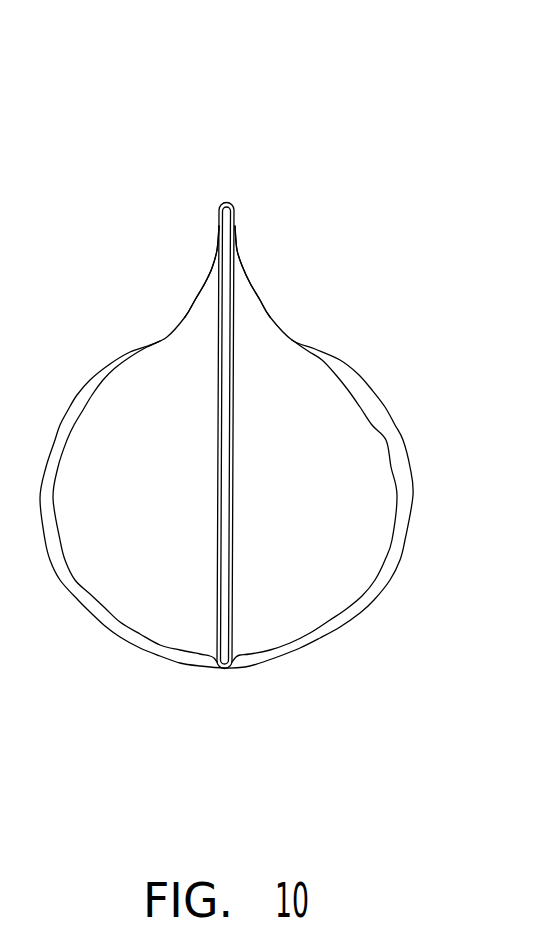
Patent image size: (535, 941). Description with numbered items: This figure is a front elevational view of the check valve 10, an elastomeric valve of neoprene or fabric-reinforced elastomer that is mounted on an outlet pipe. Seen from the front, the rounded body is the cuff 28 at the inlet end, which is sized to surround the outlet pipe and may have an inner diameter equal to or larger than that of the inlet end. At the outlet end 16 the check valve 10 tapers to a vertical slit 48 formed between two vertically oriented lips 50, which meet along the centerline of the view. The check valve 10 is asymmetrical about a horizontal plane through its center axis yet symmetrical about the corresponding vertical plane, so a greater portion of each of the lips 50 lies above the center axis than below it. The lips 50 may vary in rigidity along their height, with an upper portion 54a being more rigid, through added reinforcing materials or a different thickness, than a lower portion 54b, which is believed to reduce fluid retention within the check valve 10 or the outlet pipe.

The check valve 10 is at (451, 121).
The outlet end 16 is at (232, 525).
The cuff 28 is at (370, 383).
The slit 48 is at (220, 224).
The lips 50 is at (221, 261).
The upper portion 54a is at (220, 337).
The lower portion 54b is at (232, 578).